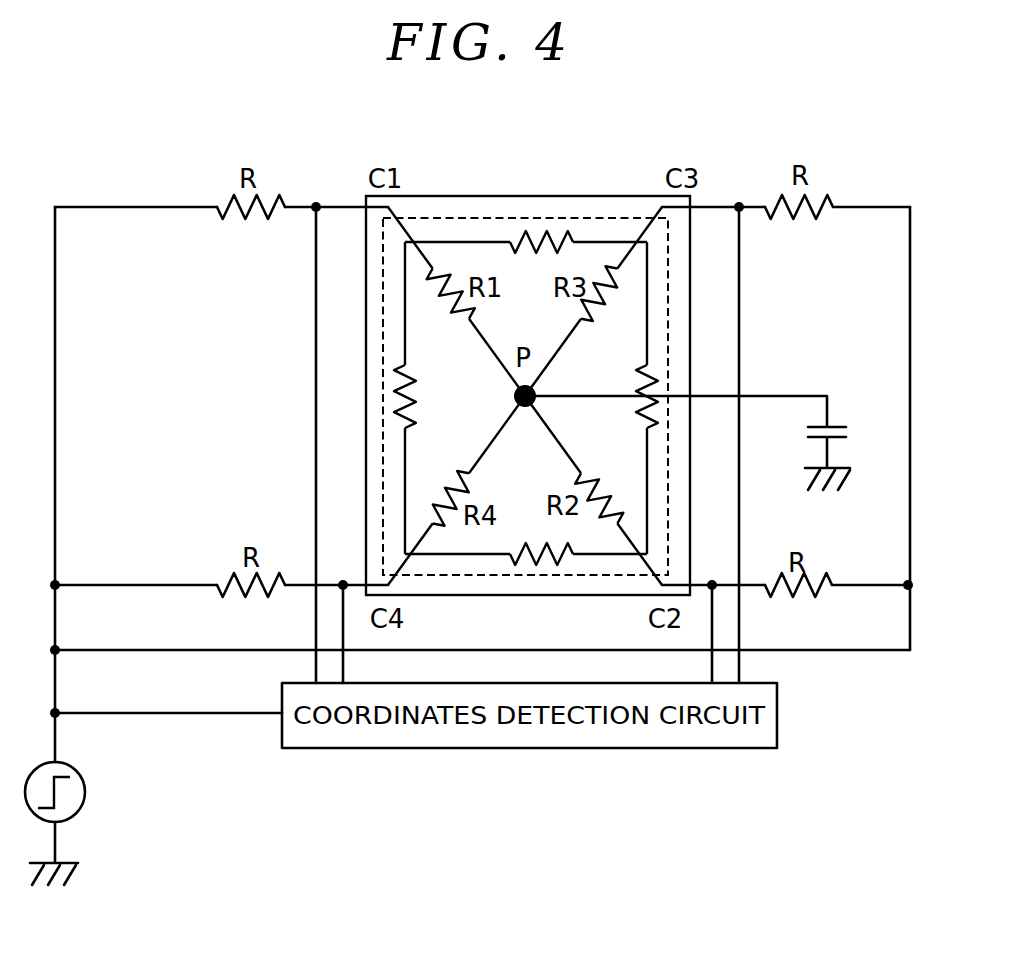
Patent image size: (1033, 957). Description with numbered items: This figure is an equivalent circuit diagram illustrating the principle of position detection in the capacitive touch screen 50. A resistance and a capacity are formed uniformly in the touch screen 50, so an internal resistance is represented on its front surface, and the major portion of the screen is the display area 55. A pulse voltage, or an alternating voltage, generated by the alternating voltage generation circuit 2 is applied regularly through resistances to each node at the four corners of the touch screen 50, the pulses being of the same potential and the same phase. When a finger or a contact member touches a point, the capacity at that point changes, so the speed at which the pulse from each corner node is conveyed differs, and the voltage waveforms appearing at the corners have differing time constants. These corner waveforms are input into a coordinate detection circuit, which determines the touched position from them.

The alternating voltage generation circuit 2 is at (86, 798).
The capacitive touch screen 50 is at (586, 196).
The display area 55 is at (477, 196).